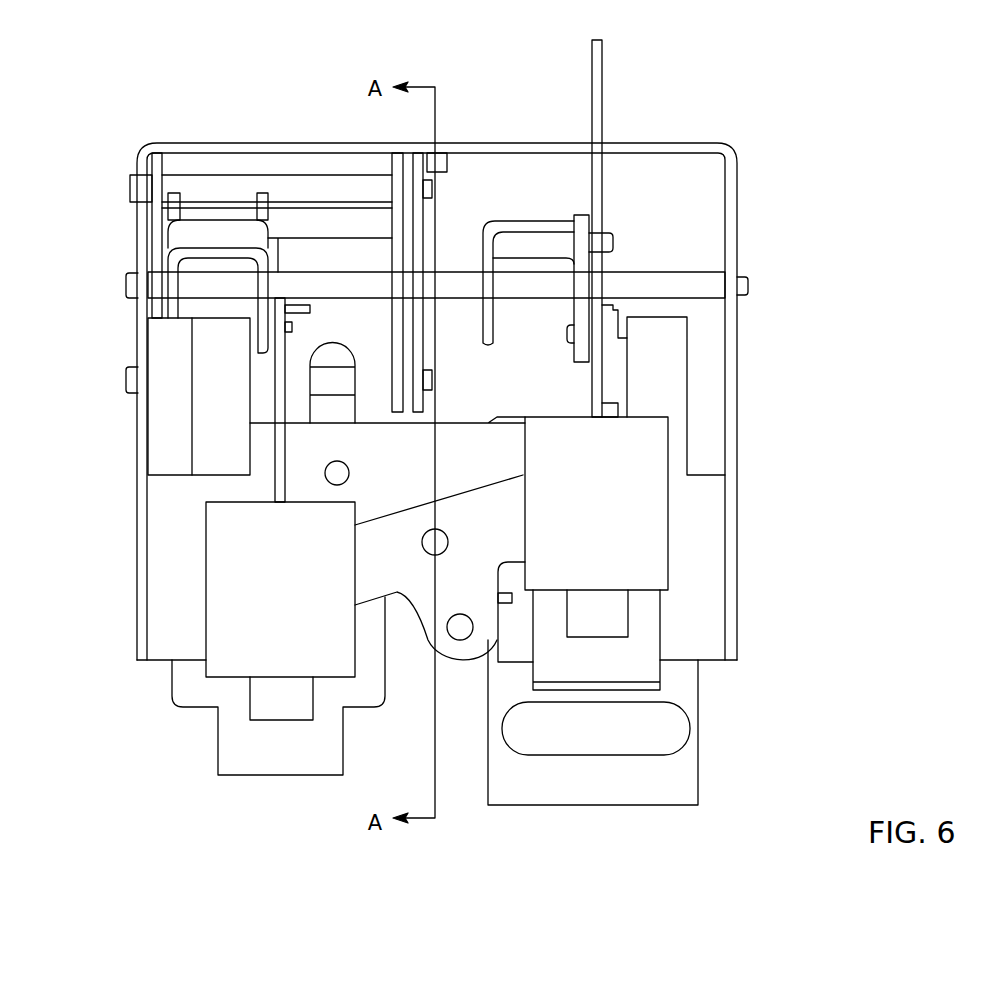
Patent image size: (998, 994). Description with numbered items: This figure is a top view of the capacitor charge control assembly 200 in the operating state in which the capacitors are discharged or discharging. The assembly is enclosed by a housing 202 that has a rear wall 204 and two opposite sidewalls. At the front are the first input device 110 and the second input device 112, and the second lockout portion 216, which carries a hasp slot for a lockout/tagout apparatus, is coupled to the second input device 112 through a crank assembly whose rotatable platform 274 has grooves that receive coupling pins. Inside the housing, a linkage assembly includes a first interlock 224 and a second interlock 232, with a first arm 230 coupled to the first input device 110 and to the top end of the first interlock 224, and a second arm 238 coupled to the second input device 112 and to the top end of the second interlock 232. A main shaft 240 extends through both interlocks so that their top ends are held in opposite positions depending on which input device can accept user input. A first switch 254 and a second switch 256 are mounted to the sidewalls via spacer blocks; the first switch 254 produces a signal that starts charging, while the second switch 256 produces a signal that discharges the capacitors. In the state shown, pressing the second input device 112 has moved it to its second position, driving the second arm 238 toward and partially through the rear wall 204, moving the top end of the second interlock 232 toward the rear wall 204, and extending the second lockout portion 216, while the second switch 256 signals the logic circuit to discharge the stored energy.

The capacitor charge control assembly 200 is at (825, 67).
The housing 202 is at (179, 143).
The rear wall 204 is at (738, 163).
The first interlock 224 is at (175, 243).
The first arm 230 is at (287, 448).
The second interlock 232 is at (514, 220).
The second arm 238 is at (602, 97).
The main shaft 240 is at (697, 272).
The first switch 254 is at (205, 438).
The second switch 256 is at (667, 372).
The platform 274 is at (455, 665).
The first input device 110 is at (280, 777).
The second input device 112 is at (645, 672).
The second lockout portion 216 is at (602, 807).